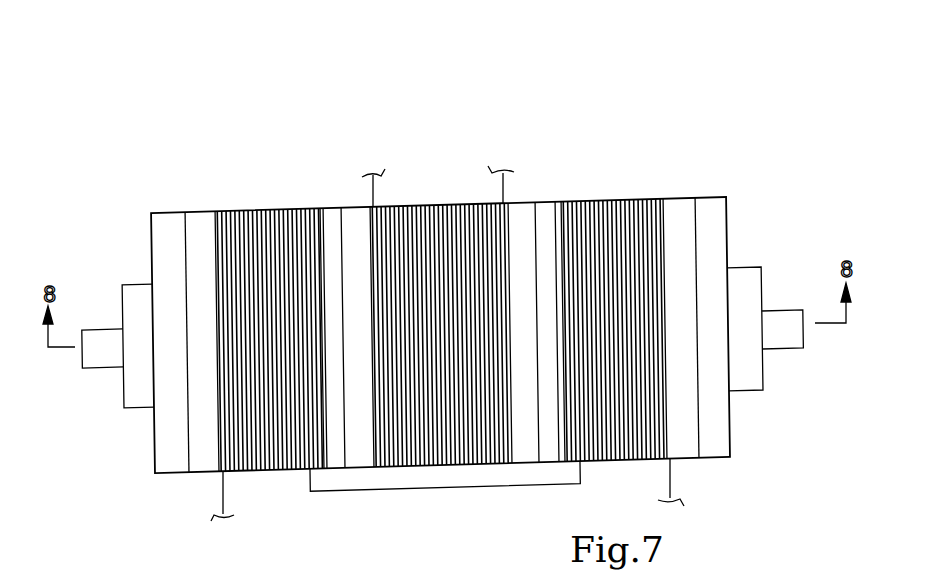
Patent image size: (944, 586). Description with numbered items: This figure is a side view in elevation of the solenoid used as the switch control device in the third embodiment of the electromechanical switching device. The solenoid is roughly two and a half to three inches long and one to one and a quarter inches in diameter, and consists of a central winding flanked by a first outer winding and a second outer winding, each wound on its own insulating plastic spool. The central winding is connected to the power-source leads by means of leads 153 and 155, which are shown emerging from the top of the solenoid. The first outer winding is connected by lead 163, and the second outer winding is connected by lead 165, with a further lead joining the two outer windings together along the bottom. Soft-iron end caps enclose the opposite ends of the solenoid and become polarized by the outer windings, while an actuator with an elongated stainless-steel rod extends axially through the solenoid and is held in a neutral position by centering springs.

The lead 153 is at (368, 182).
The lead 155 is at (508, 190).
The lead 163 is at (219, 501).
The lead 165 is at (674, 478).